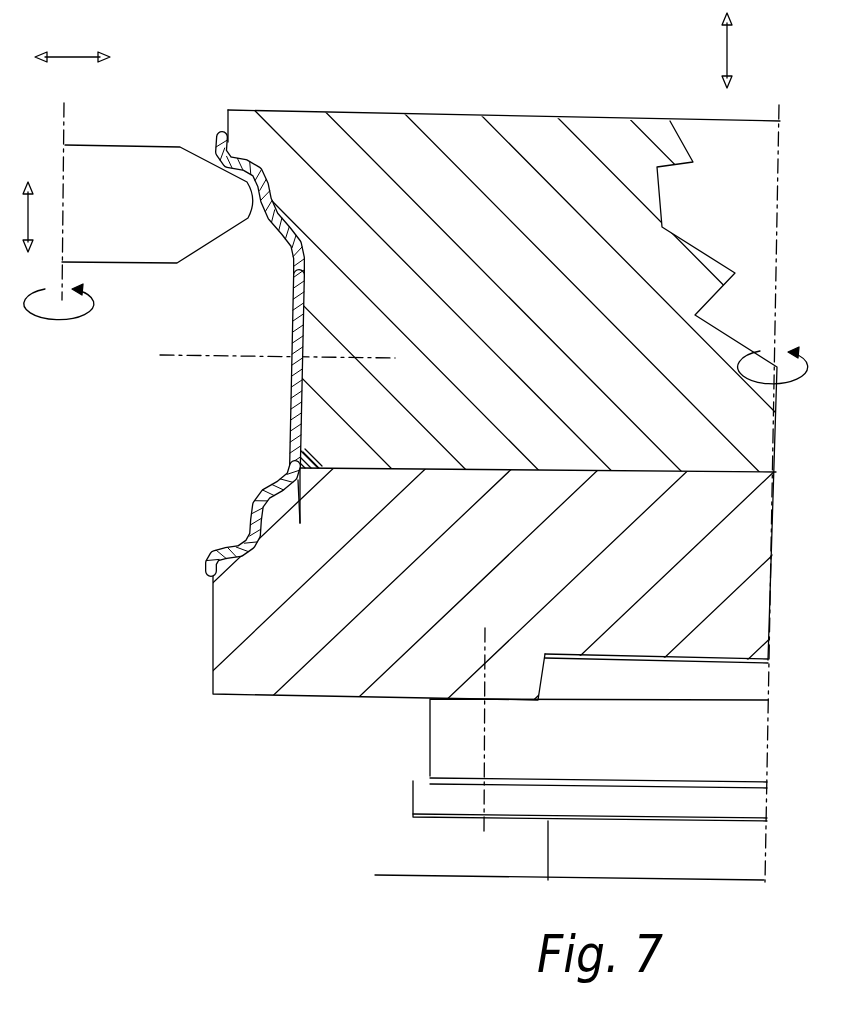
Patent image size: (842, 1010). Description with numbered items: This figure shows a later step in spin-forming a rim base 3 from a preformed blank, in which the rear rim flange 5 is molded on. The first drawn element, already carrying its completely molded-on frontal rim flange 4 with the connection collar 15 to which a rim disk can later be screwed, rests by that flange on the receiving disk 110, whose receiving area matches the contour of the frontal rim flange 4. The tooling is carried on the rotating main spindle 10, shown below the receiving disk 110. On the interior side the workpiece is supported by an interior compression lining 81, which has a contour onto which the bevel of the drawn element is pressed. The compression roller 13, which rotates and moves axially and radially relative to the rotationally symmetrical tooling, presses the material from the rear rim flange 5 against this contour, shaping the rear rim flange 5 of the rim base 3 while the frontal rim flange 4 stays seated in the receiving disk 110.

The rim base 3 is at (282, 378).
The frontal rim flange 4 is at (235, 512).
The rear rim flange 5 is at (281, 166).
The main spindle 10 is at (420, 835).
The compression roller 13 is at (140, 234).
The connection collar 15 is at (219, 579).
The interior compression lining 81 is at (475, 140).
The receiving disk 110 is at (340, 648).